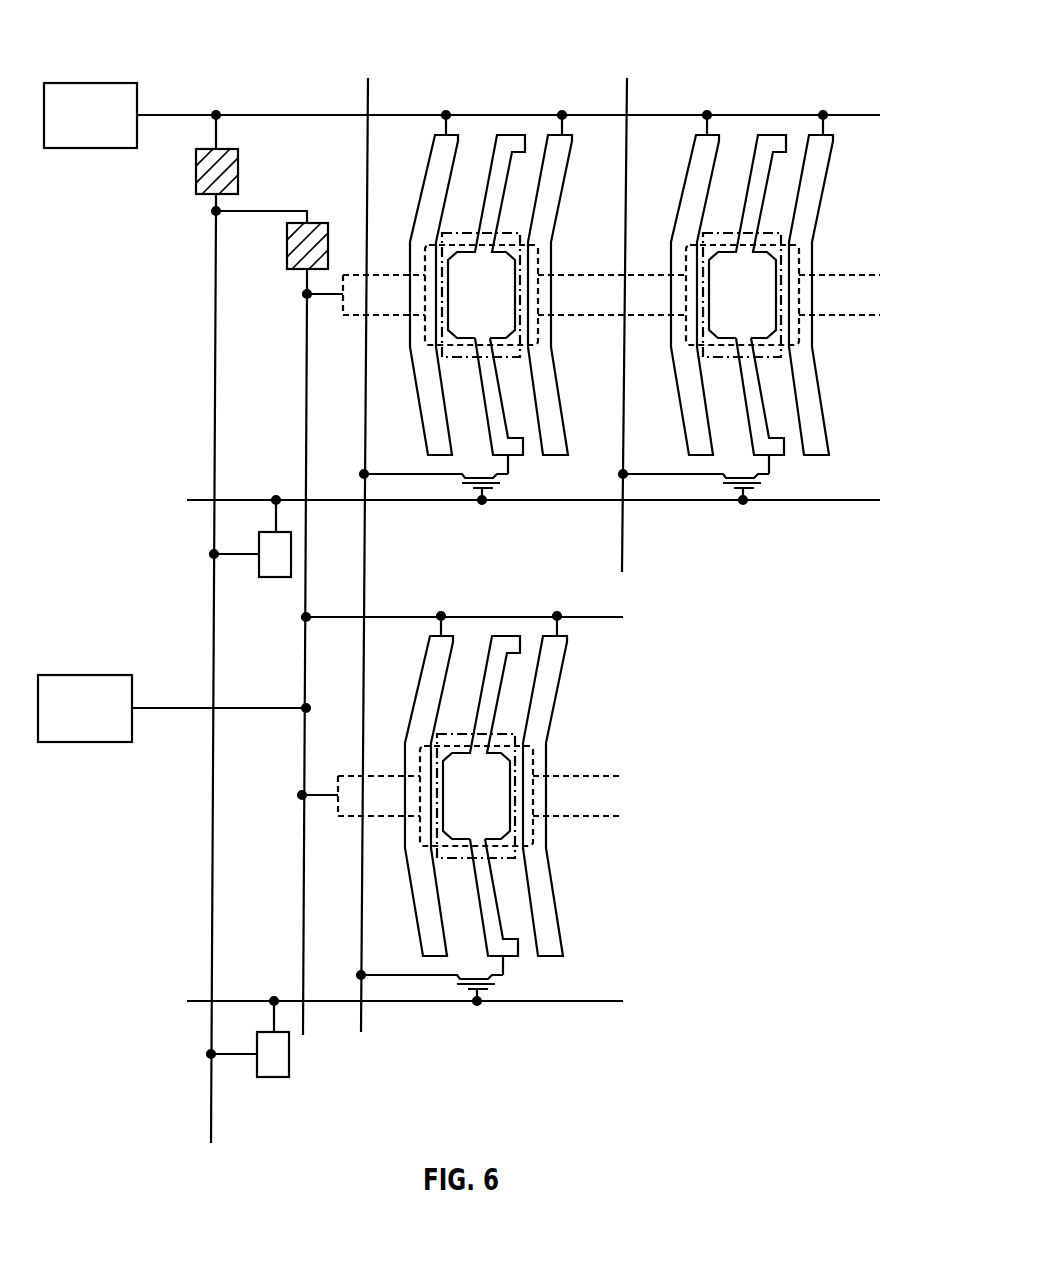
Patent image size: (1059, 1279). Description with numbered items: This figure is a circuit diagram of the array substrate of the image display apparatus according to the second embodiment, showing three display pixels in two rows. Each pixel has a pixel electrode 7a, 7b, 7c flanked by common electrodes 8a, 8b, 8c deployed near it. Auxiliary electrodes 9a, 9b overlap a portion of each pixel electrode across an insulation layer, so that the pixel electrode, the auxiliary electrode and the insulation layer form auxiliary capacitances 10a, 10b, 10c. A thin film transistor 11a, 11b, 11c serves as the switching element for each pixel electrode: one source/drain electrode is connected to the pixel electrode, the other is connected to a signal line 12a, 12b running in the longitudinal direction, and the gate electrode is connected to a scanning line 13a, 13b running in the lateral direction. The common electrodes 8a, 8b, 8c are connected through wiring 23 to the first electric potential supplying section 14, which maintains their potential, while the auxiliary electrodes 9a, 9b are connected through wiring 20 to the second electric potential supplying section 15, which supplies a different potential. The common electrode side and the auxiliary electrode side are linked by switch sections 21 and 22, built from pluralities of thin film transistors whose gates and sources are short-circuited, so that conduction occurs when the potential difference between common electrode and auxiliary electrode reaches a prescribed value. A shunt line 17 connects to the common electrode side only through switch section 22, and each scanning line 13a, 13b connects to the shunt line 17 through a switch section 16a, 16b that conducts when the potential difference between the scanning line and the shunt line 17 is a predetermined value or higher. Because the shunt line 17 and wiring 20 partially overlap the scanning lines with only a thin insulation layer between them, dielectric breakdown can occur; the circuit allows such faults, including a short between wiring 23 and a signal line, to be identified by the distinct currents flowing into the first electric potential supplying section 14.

The pixel electrode 7a is at (515, 143).
The pixel electrode 7b is at (747, 177).
The pixel electrode 7c is at (481, 693).
The common electrode 8a is at (440, 143).
The common electrode 8b is at (762, 239).
The common electrode 8c is at (498, 752).
The auxiliary electrode 9a is at (603, 318).
The auxiliary electrode 9b is at (480, 809).
The auxiliary capacitance 10a is at (513, 358).
The auxiliary capacitance 10b is at (805, 406).
The auxiliary capacitance 10c is at (541, 907).
The thin film transistor 11a is at (500, 490).
The thin film transistor 11b is at (729, 505).
The thin film transistor 11c is at (465, 1010).
The signal line 12a is at (367, 93).
The signal line 12b is at (628, 100).
The scanning line 13a is at (193, 501).
The scanning line 13b is at (193, 1001).
The first electric potential supplying section 14 is at (97, 83).
The second electric potential supplying section 15 is at (92, 675).
The switch section 16a is at (265, 578).
The switch section 16b is at (270, 1078).
The shunt line 17 is at (213, 328).
The wiring 20 is at (305, 381).
The switch section 21 is at (318, 223).
The switch section 22 is at (196, 175).
The wiring 23 is at (258, 115).